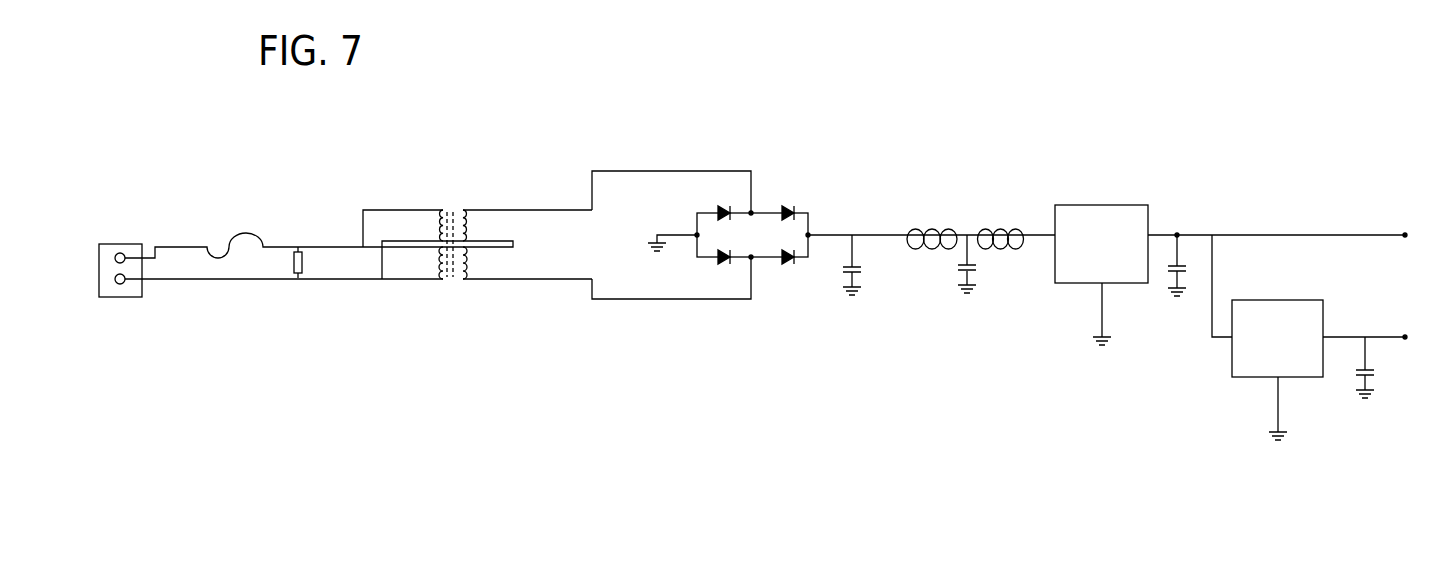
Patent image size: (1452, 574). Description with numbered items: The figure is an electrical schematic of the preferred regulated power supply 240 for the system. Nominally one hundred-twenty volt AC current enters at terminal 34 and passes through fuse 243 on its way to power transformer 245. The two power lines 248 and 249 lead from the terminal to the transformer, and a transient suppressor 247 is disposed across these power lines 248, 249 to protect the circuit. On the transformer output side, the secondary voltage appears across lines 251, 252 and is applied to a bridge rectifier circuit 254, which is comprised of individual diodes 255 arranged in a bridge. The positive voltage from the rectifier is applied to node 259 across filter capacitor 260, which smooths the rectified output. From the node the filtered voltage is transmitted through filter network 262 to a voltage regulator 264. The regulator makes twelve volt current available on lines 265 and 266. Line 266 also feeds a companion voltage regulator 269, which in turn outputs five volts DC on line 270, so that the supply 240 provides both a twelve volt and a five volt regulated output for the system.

The terminal 34 is at (127, 237).
The power supply 240 is at (559, 128).
The fuse 243 is at (218, 252).
The power transformer 245 is at (452, 205).
The transient suppressor 247 is at (290, 263).
The power line 248 is at (315, 245).
The power line 249 is at (340, 282).
The secondary line 251 is at (558, 210).
The secondary line 252 is at (548, 279).
The bridge rectifier circuit 254 is at (793, 202).
The diode 255 is at (783, 263).
The node 259 is at (852, 232).
The filter capacitor 260 is at (857, 273).
The filter network 262 is at (947, 220).
The voltage regulator 264 is at (1110, 215).
The line 265 is at (1302, 235).
The line 266 is at (1210, 310).
The companion voltage regulator 269 is at (1253, 373).
The line 270 is at (1380, 338).